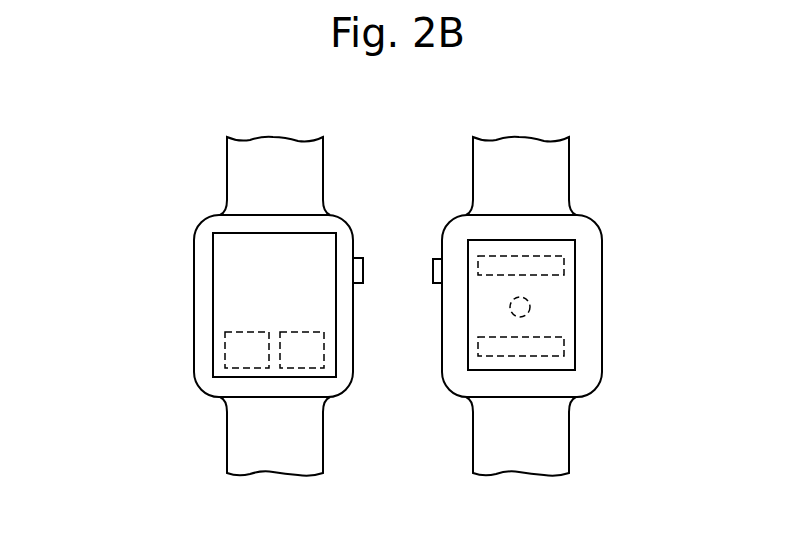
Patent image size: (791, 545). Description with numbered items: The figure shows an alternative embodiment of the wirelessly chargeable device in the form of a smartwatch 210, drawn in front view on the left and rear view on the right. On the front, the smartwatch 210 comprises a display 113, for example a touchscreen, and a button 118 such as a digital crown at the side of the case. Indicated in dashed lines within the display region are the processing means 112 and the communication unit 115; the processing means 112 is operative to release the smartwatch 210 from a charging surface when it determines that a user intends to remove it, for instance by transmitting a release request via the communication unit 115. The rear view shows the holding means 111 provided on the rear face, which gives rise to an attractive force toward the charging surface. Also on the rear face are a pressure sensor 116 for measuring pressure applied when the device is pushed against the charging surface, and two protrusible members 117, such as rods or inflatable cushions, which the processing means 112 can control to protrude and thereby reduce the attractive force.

The smartwatch 210 is at (150, 136).
The holding means 111 is at (535, 240).
The processing means 112 is at (318, 365).
The display 113 is at (232, 267).
The communication unit 115 is at (232, 353).
The pressure sensor 116 is at (530, 304).
The protrusible members 117 is at (555, 266).
The button 118 is at (364, 267).